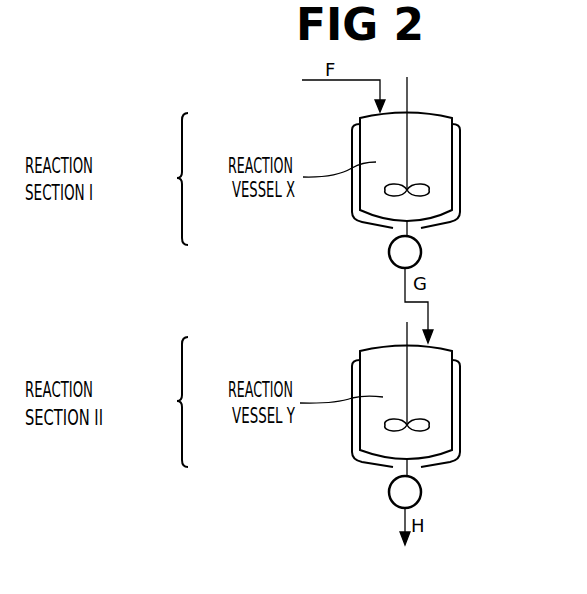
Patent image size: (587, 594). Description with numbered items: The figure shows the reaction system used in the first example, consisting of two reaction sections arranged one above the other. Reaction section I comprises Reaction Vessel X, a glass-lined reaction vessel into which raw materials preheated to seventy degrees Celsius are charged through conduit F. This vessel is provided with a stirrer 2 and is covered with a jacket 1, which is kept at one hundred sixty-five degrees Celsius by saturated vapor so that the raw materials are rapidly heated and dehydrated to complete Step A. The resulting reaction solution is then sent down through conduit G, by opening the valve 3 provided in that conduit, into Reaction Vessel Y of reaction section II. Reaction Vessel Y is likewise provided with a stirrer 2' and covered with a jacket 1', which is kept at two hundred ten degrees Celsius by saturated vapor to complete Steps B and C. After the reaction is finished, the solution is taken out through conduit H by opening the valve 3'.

The jacket 1 is at (422, 171).
The stirrer 2 is at (411, 136).
The valve 3 is at (382, 244).
The jacket 1' is at (425, 407).
The stirrer 2' is at (435, 376).
The valve 3' is at (382, 483).